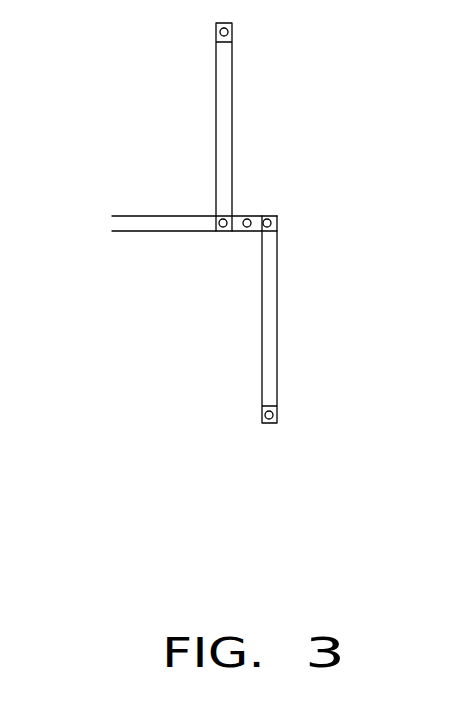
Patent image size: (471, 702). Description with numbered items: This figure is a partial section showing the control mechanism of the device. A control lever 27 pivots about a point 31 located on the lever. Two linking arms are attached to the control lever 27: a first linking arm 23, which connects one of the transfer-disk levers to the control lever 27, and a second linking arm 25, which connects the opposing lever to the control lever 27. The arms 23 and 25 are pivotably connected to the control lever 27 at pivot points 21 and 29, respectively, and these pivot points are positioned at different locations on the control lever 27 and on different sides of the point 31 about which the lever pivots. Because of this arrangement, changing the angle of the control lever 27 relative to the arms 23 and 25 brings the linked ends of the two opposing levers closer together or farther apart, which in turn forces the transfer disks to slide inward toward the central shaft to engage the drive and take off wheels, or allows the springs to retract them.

The pivot point 21 is at (248, 219).
The linking arm 23 is at (217, 128).
The linking arm 25 is at (262, 318).
The control lever 27 is at (152, 232).
The pivot point 29 is at (272, 224).
The pivot point of control lever 31 is at (269, 218).